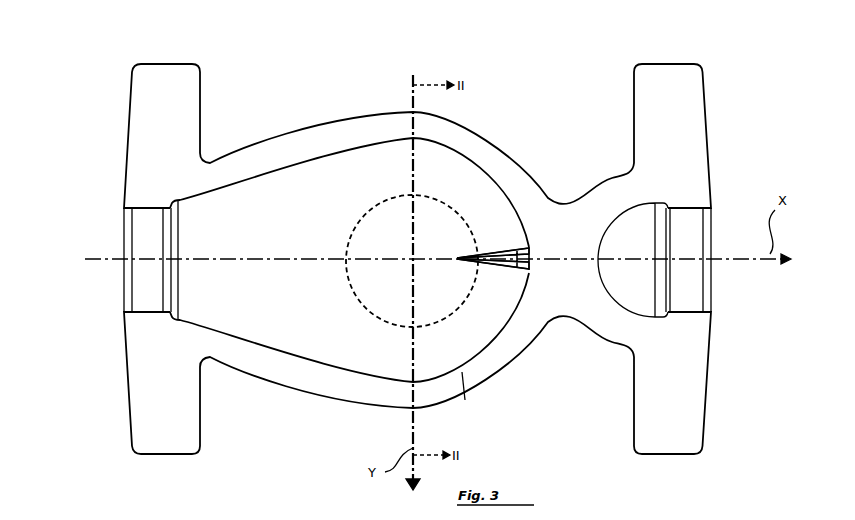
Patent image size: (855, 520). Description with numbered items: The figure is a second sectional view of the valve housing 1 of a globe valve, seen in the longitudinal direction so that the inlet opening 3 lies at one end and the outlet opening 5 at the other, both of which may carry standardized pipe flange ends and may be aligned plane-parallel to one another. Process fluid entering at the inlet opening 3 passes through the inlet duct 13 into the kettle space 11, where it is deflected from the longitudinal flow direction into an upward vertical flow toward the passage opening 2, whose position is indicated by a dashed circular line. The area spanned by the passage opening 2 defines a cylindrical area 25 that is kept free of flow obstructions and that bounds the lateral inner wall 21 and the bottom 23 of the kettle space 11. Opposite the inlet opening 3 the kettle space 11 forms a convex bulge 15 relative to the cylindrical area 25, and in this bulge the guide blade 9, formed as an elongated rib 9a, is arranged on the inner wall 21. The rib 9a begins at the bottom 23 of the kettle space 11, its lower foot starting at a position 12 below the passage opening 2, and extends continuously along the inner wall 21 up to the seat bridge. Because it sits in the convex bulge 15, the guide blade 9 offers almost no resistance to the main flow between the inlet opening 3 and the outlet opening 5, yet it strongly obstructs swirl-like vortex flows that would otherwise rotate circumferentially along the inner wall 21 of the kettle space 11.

The valve housing 1 is at (275, 150).
The passage opening 2 is at (367, 312).
The inlet opening 3 is at (148, 282).
The outlet opening 5 is at (688, 283).
The guide blade 9 is at (508, 242).
The rib 9a is at (528, 273).
The kettle space 11 is at (355, 173).
The position 12 is at (462, 252).
The inlet duct 13 is at (228, 300).
The convex bulge 15 is at (478, 375).
The inner wall 21 is at (476, 340).
The bottom 23 is at (388, 307).
The cylindrical area 25 is at (395, 193).